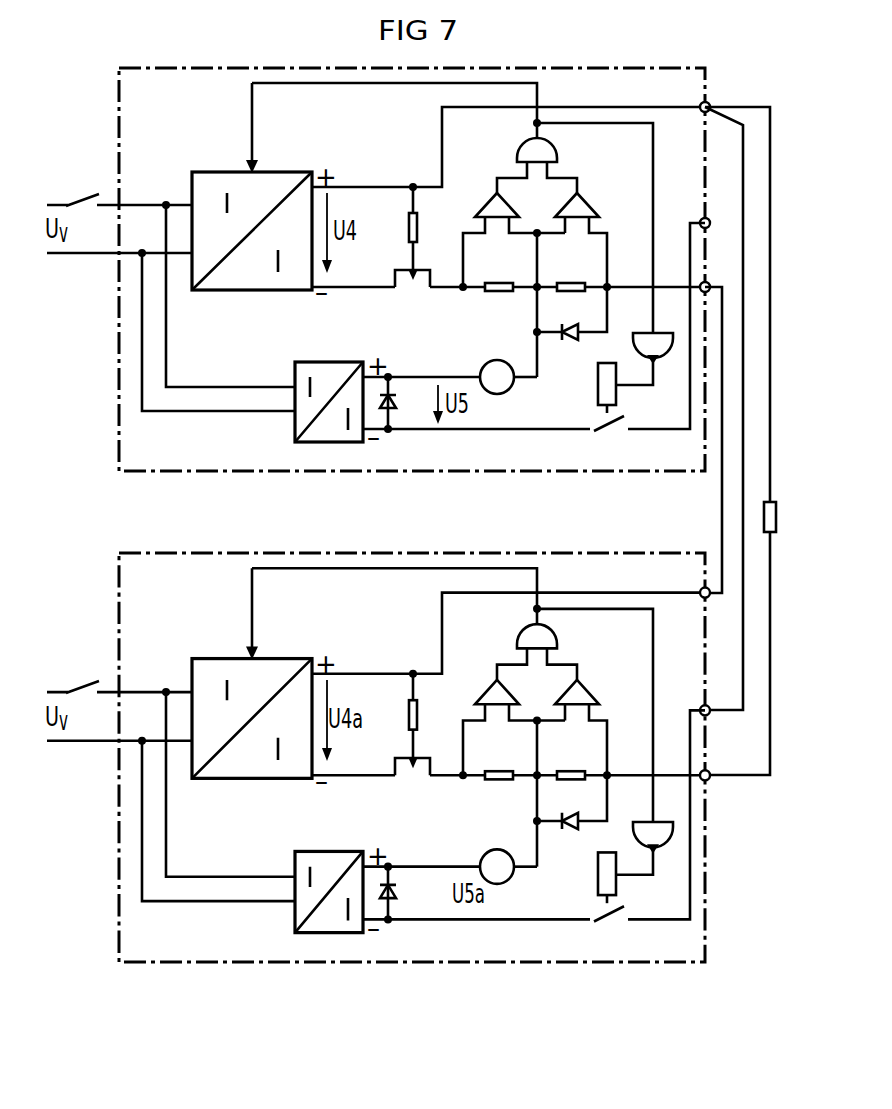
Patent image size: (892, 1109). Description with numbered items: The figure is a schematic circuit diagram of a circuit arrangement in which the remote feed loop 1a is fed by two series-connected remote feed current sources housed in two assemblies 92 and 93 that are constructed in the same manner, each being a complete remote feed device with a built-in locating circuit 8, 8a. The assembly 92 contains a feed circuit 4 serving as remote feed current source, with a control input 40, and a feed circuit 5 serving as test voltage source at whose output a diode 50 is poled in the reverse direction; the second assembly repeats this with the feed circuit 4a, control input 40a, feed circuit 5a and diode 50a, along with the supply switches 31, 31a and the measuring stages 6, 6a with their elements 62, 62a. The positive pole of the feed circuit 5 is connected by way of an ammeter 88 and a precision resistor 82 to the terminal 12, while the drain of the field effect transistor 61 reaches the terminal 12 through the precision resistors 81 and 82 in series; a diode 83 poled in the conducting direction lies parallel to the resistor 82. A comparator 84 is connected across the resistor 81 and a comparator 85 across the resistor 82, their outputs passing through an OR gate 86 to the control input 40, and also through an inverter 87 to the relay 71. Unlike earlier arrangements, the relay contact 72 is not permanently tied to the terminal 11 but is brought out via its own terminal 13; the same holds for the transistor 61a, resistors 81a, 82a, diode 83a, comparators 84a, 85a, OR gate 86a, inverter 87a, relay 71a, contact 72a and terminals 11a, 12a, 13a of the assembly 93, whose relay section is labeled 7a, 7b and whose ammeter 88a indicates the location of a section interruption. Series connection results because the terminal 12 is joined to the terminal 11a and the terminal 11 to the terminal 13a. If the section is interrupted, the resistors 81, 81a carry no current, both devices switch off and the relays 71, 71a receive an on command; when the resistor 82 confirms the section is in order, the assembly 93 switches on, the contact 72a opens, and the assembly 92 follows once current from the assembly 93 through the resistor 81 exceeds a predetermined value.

The assembly 92 is at (118, 116).
The assembly 93 is at (395, 757).
The supply switch 31 is at (119, 211).
The supply switch 31a is at (119, 698).
The feed circuit 4 is at (252, 218).
The feed circuit 4a is at (252, 705).
The control input 40 is at (267, 129).
The control input 40a is at (270, 615).
The measuring circuit 6 is at (383, 229).
The measuring circuit 6a is at (406, 725).
The resistor 62 is at (425, 228).
The resistor 62a is at (431, 716).
The field effect transistor 61 is at (401, 267).
The field effect transistor 61a is at (395, 755).
The locating circuit 8 is at (633, 168).
The locating circuit 8a is at (540, 693).
The OR gate 86 is at (535, 159).
The OR gate 86a is at (527, 646).
The comparator 84 is at (512, 235).
The comparator 84a is at (507, 722).
The comparator 85 is at (583, 234).
The comparator 85a is at (587, 721).
The terminal 11 is at (714, 94).
The terminal 11a is at (687, 580).
The terminal 12 is at (715, 275).
The terminal 12a is at (719, 763).
The terminal 13 is at (715, 223).
The terminal 13a is at (687, 697).
The precision resistor 81 is at (500, 271).
The precision resistor 81a is at (500, 759).
The precision resistor 82 is at (621, 271).
The precision resistor 82a is at (621, 759).
The diode 83 is at (572, 313).
The diode 83a is at (572, 802).
The ammeter 88 is at (508, 363).
The ammeter 88a is at (507, 853).
The inverter 87 is at (644, 343).
The inverter 87a is at (644, 832).
The relay 71 is at (620, 389).
The relay 71a is at (625, 879).
The relay contact 72 is at (649, 343).
The relay contact 72a is at (649, 832).
The relay unit 7a is at (574, 415).
The relay unit 7b is at (624, 832).
The feed circuit 5 is at (329, 388).
The feed circuit 5a is at (329, 877).
The diode 50 is at (402, 403).
The diode 50a is at (407, 893).
The remote feed loop 1a is at (781, 519).